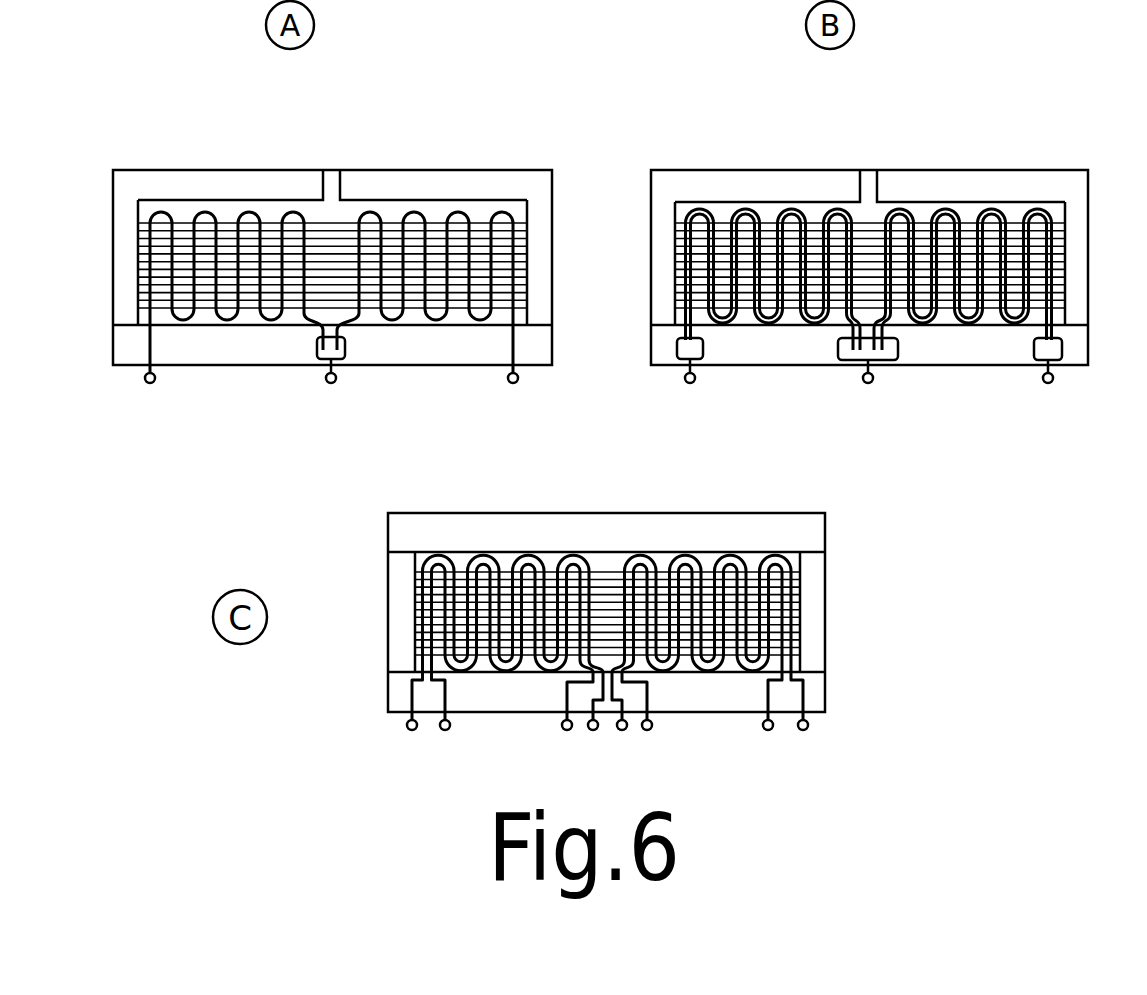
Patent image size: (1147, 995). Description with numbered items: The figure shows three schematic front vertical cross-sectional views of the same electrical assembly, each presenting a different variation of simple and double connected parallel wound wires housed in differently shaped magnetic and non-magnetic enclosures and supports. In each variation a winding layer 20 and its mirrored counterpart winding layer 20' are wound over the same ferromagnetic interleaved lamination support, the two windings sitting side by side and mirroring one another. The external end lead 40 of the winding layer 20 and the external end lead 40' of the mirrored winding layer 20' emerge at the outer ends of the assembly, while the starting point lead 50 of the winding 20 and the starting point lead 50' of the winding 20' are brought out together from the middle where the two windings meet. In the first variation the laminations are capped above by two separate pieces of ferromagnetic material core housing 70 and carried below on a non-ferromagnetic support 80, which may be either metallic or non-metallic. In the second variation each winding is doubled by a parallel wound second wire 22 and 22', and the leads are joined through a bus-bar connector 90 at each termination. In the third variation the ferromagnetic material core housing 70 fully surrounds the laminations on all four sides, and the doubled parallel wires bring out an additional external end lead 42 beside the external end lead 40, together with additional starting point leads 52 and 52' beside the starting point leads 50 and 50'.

The winding layer 20 is at (501, 382).
The mirrored winding layer 20' is at (705, 382).
The second wire of first coil 22 is at (639, 387).
The second wire of second coil 22' is at (840, 387).
The external end lead 40 is at (431, 544).
The external end lead 40' is at (780, 544).
The outer terminal of second wire 42 is at (446, 735).
The starting point lead 50 is at (425, 544).
The starting point lead 50' is at (489, 547).
The inner terminal of second wire of first coil 52 is at (591, 730).
The inner terminal of second wire of second coil 52' is at (663, 710).
The ferromagnetic material core housing 70 is at (375, 183).
The non-ferromagnetic support 80 is at (660, 347).
The bus-bar connector 90 is at (840, 350).